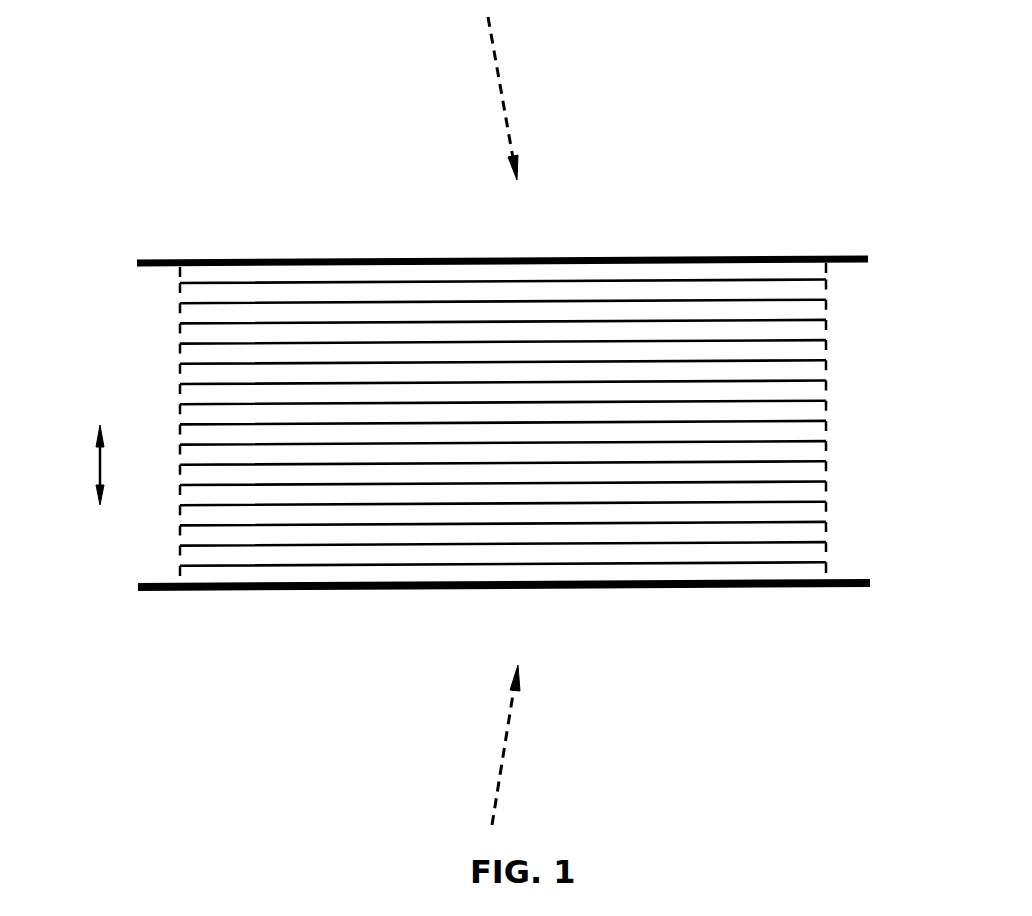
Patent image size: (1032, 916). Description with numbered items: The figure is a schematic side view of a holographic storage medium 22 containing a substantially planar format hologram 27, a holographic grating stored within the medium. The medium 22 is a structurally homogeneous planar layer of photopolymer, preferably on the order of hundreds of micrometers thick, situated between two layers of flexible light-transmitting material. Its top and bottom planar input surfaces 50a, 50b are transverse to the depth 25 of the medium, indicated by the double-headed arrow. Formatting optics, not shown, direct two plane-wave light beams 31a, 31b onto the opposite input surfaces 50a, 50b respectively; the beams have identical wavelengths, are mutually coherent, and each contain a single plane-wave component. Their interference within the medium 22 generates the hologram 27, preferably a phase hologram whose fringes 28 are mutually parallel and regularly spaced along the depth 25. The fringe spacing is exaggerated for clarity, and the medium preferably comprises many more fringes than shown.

The holographic storage medium 22 is at (847, 255).
The depth 25 is at (98, 467).
The format hologram 27 is at (807, 430).
The fringes 28 is at (785, 397).
The plane-wave light beam 31a is at (503, 109).
The plane-wave light beam 31b is at (507, 736).
The planar input surface 50a is at (230, 260).
The planar input surface 50b is at (223, 592).